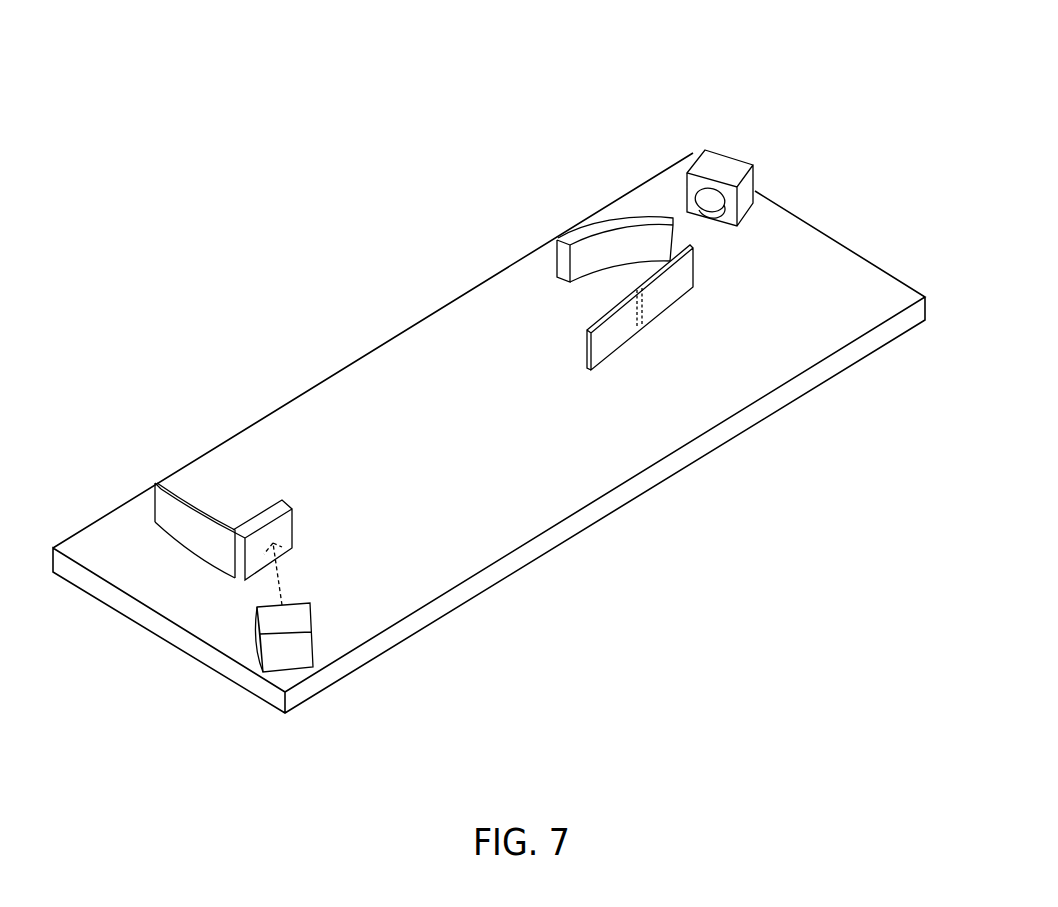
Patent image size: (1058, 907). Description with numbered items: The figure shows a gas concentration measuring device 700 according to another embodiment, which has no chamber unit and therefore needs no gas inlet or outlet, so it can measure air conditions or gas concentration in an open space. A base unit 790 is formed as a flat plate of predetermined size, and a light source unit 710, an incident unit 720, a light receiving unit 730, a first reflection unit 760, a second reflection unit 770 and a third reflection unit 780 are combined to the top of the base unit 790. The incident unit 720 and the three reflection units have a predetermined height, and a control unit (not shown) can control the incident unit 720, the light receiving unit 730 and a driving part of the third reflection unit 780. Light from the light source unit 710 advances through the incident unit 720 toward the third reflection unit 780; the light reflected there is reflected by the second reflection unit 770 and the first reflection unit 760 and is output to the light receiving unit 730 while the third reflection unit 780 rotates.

The gas concentration measuring device 700 is at (946, 40).
The light source unit 710 is at (300, 648).
The incident unit 720 is at (283, 532).
The light receiving unit 730 is at (722, 165).
The first reflection unit 760 is at (175, 493).
The second reflection unit 770 is at (590, 232).
The third reflection unit 780 is at (675, 282).
The base unit 790 is at (640, 437).